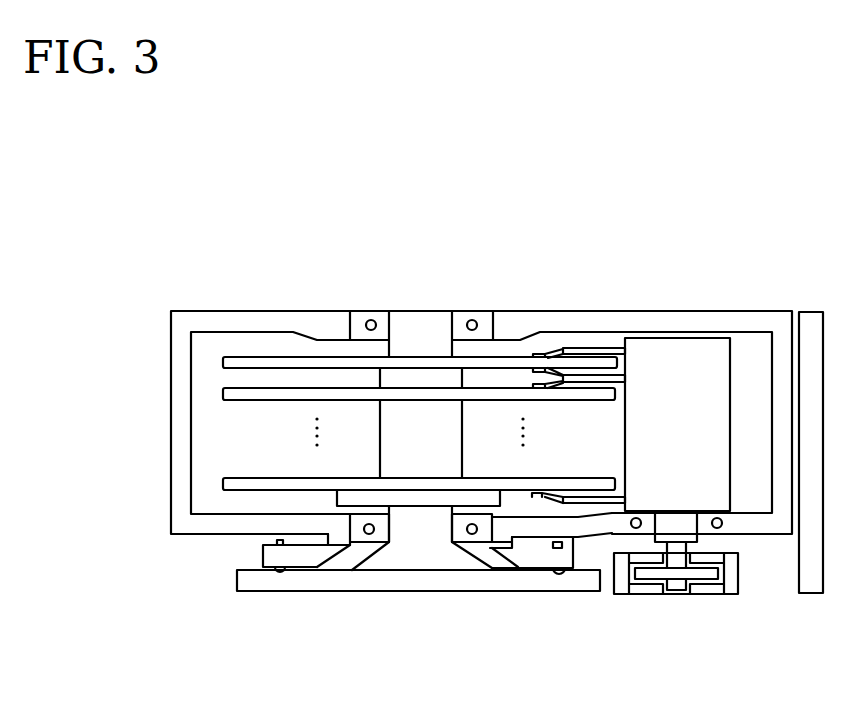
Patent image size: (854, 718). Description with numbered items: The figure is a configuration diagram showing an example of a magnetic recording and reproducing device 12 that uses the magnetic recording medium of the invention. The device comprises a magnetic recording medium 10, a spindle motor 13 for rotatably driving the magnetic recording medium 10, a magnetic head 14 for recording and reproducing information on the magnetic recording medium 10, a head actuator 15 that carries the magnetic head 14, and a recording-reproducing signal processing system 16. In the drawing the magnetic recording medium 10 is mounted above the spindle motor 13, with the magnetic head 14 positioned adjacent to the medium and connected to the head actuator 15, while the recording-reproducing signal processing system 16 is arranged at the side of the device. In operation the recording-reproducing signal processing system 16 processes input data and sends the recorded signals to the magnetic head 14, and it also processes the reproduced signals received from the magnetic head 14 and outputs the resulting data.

The magnetic recording medium 10 is at (238, 357).
The magnetic recording and reproducing device 12 is at (611, 240).
The spindle motor 13 is at (423, 532).
The magnetic head 14 is at (542, 356).
The head actuator 15 is at (680, 352).
The recording-reproducing signal processing system 16 is at (808, 583).